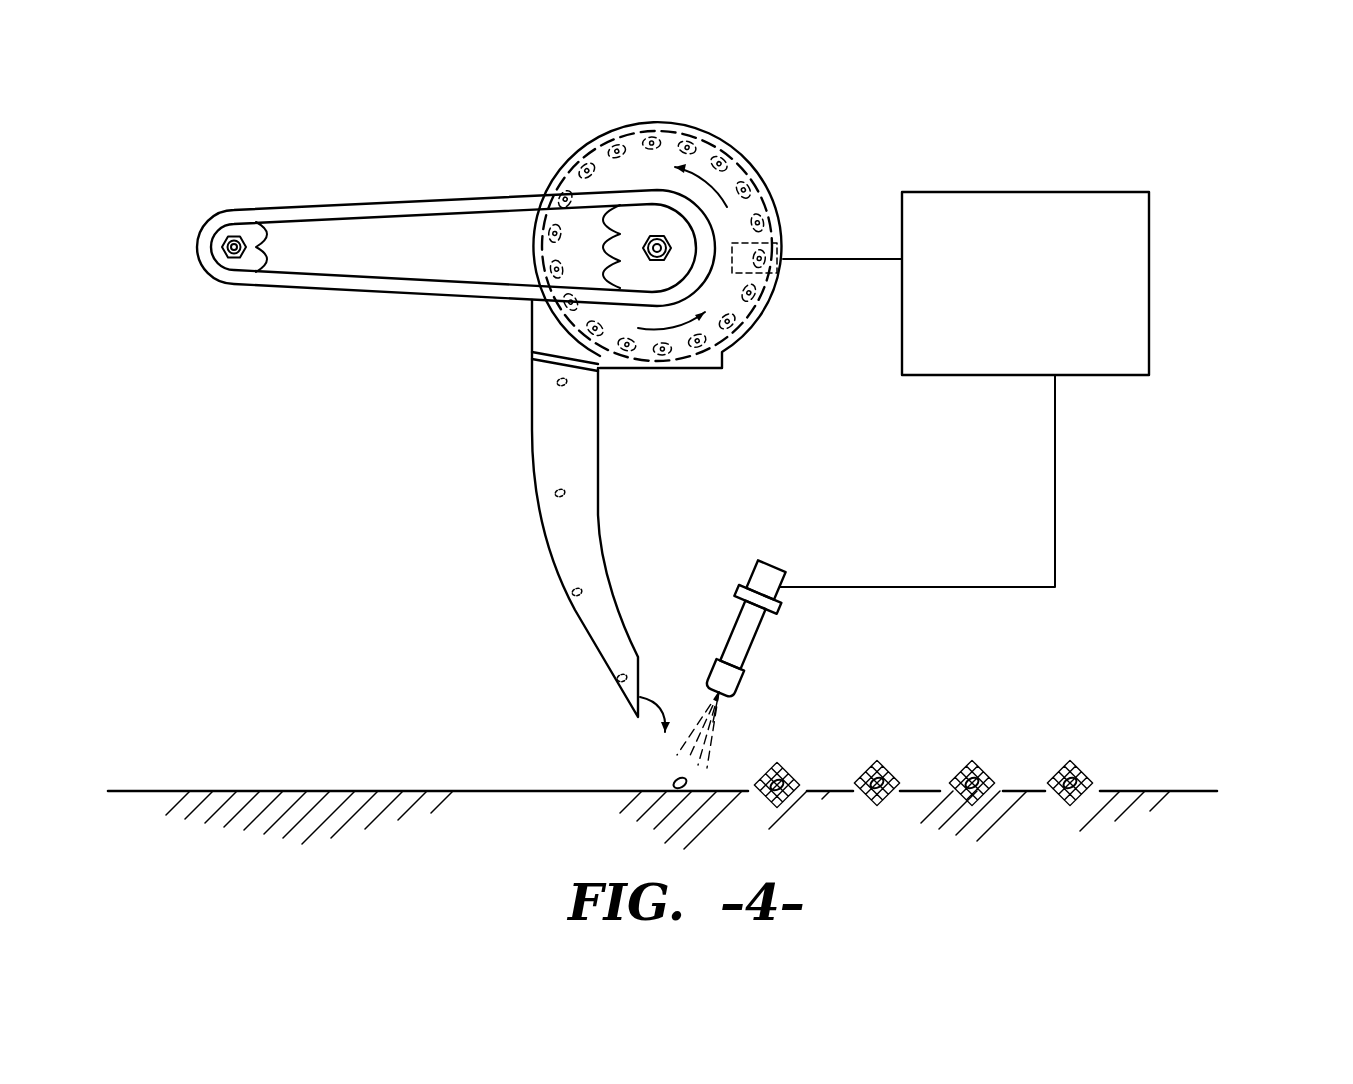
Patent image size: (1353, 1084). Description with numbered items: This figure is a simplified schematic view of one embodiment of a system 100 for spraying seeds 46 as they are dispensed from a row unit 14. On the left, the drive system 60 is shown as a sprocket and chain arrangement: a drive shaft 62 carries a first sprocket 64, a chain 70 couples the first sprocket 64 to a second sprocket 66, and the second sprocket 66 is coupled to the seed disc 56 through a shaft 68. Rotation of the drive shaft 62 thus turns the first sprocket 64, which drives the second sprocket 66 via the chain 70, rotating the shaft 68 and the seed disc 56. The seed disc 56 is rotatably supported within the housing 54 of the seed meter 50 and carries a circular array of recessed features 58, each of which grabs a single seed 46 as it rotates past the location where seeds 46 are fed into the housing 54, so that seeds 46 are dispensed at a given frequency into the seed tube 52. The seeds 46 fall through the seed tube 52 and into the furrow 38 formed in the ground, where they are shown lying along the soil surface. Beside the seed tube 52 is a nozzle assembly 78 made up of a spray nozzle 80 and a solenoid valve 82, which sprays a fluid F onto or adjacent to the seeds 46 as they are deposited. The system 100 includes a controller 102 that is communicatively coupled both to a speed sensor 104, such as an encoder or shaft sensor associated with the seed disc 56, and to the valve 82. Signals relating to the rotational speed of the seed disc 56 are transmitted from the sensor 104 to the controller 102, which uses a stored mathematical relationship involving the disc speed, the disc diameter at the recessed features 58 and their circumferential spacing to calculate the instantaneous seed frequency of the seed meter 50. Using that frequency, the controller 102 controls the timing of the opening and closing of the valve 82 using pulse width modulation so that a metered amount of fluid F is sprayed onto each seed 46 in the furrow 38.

The row unit 14 is at (431, 220).
The furrow 38 is at (572, 791).
The seeds 46 is at (577, 592).
The seed meter 50 is at (718, 125).
The seed tube 52 is at (600, 460).
The housing 54 is at (747, 165).
The seed disc 56 is at (606, 140).
The recessed features 58 is at (687, 140).
The drive system 60 is at (333, 308).
The drive shaft 62 is at (233, 240).
The first sprocket 64 is at (266, 220).
The second sprocket 66 is at (603, 250).
The shaft 68 is at (656, 236).
The chain 70 is at (457, 195).
The nozzle assembly 78 is at (762, 652).
The spray nozzle 80 is at (737, 648).
The solenoid valve 82 is at (763, 585).
The system 100 is at (1039, 381).
The controller 102 is at (1000, 292).
The speed sensor 104 is at (750, 243).
The fluid F is at (713, 733).